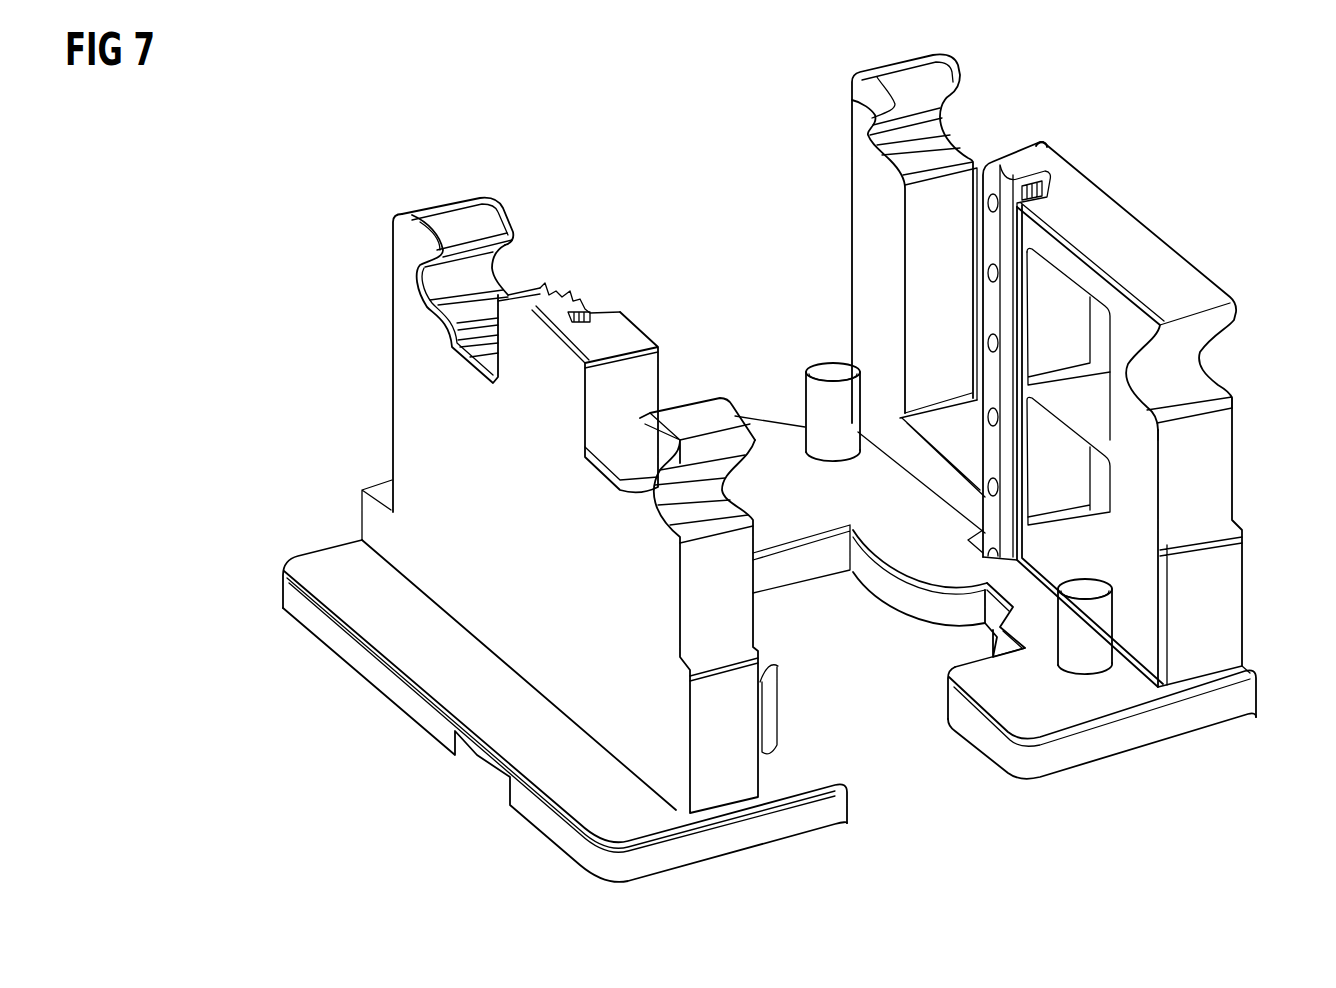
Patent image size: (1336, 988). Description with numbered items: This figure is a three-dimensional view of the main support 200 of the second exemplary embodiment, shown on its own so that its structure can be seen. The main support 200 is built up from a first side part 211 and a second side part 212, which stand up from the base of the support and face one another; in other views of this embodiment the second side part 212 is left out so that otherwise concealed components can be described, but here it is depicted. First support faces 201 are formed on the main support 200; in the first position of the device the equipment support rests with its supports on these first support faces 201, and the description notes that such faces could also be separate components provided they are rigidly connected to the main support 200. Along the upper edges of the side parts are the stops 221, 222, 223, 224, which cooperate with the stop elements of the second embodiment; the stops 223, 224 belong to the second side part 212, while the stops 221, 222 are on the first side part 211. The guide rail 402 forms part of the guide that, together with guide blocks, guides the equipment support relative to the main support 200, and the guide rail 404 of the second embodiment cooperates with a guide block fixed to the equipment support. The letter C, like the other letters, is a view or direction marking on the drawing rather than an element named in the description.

The main support 200 is at (1145, 732).
The first support face 201 is at (1087, 593).
The first side part 211 is at (1143, 468).
The second side part 212 is at (571, 586).
The stop 221 is at (1200, 391).
The stop 222 is at (933, 152).
The stop 223 is at (724, 513).
The stop 224 is at (450, 312).
The guide rail 402 is at (1013, 177).
The guide rail 404 is at (567, 308).
The view direction C is at (384, 764).